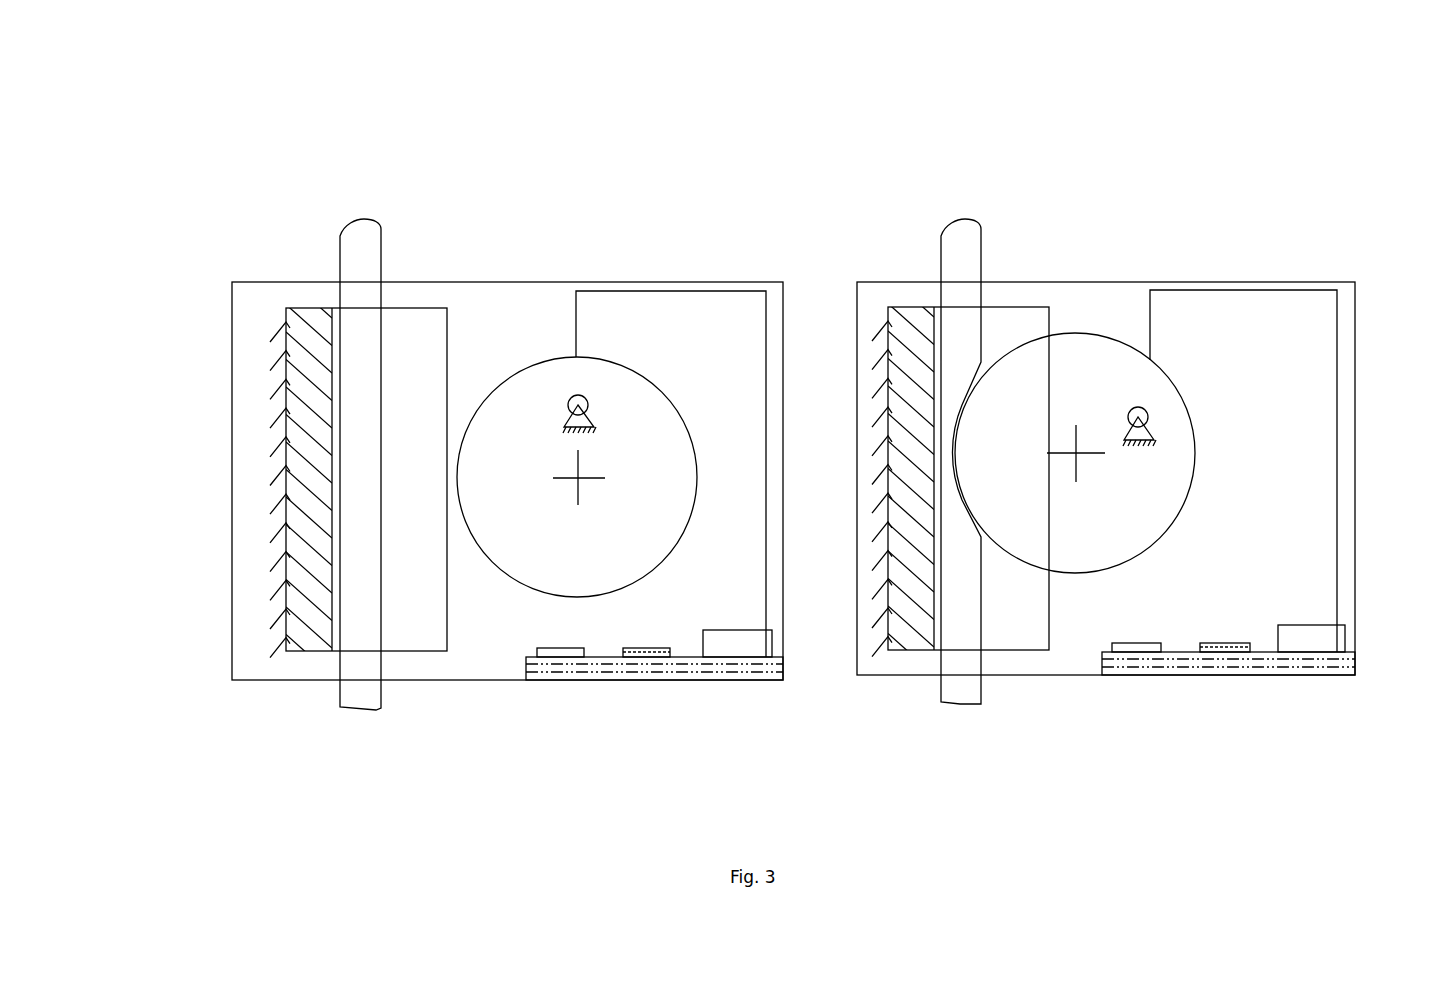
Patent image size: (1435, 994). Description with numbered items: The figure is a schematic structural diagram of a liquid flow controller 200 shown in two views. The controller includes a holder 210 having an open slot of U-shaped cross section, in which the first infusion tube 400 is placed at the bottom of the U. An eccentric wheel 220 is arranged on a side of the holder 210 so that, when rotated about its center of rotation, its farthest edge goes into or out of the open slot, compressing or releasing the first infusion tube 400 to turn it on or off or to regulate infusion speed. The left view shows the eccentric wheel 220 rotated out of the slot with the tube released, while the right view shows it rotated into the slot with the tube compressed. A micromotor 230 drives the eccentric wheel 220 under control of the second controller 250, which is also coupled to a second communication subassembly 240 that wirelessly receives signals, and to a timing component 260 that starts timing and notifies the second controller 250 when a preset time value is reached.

The liquid flow controller 200 is at (714, 368).
The holder 210 is at (638, 441).
The eccentric wheel 220 is at (897, 473).
The micromotor 230 is at (819, 382).
The second communication subassembly 240 is at (878, 687).
The second controller 250 is at (961, 675).
The timing component 260 is at (970, 687).
The first infusion tube 400 is at (750, 463).